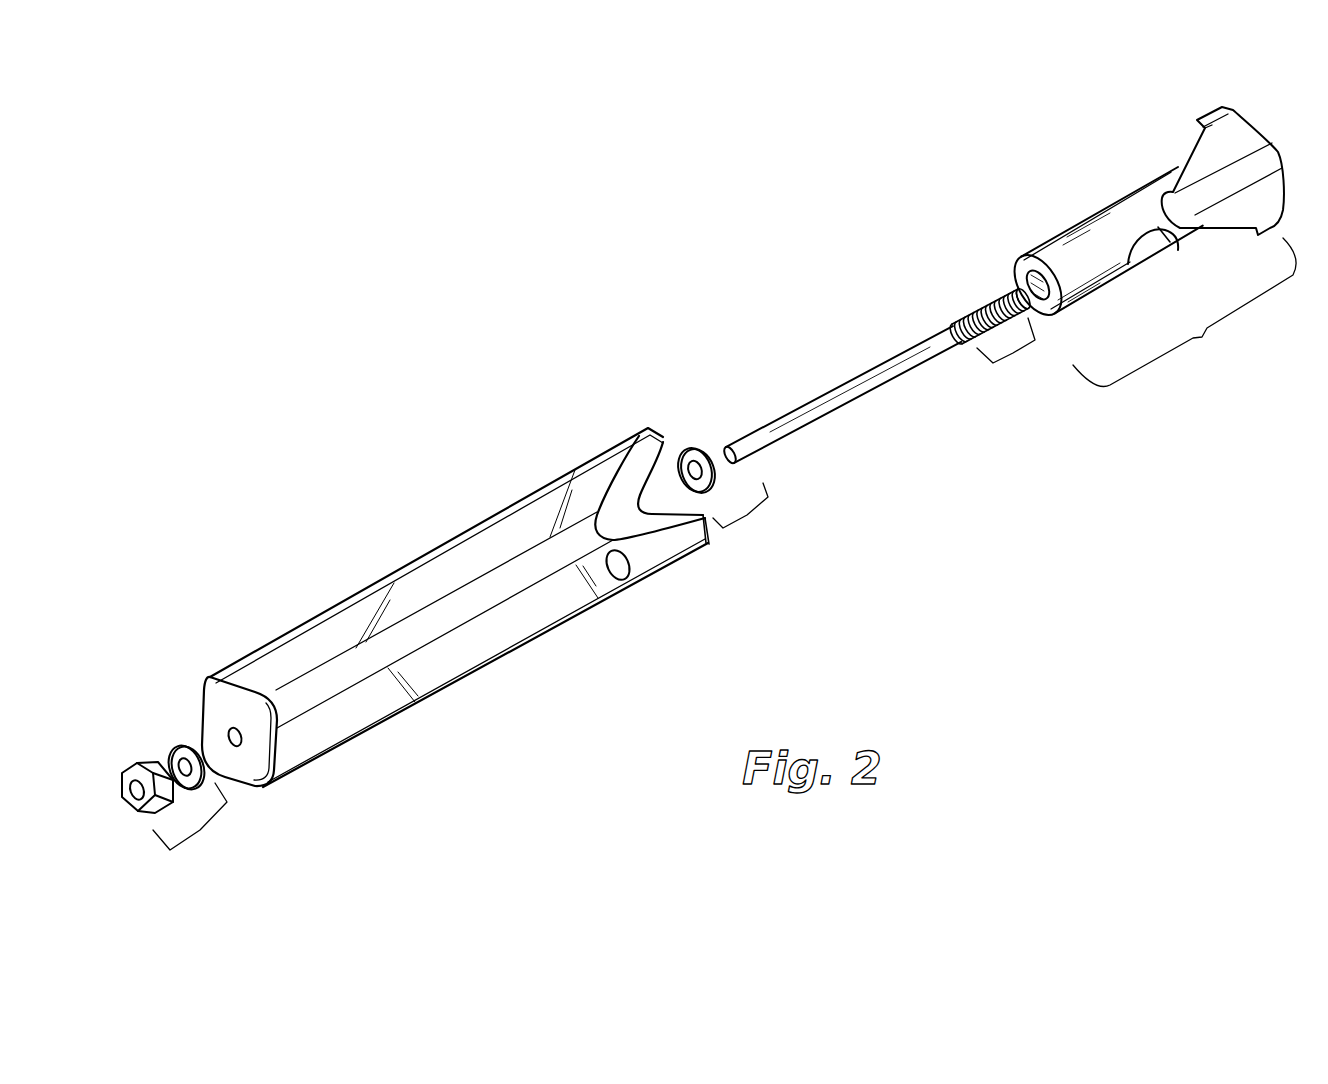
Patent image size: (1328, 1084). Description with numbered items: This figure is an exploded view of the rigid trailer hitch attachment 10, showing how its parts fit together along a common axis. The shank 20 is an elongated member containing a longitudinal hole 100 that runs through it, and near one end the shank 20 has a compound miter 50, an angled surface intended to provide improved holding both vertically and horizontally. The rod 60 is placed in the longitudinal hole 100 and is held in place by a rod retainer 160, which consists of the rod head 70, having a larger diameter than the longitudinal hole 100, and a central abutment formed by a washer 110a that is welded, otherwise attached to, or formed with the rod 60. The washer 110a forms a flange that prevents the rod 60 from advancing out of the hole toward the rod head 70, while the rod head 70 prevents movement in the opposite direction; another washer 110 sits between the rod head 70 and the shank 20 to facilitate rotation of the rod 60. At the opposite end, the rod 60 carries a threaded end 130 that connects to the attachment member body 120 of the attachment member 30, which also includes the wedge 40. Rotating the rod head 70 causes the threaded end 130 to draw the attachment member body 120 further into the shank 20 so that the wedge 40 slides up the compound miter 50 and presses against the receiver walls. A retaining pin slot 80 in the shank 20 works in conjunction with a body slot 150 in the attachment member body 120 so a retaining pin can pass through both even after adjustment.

The rigid trailer hitch attachment 10 is at (462, 362).
The shank 20 is at (437, 567).
The attachment member 30 is at (1202, 337).
The wedge 40 is at (1256, 122).
The compound miter 50 is at (625, 495).
The rod 60 is at (873, 377).
The rod head 70 is at (140, 762).
The retaining pin slot 80 is at (620, 568).
The longitudinal hole 100 is at (233, 729).
The washer 110 is at (697, 447).
The washer 110a is at (182, 747).
The attachment member body 120 is at (1103, 230).
The threaded end 130 is at (973, 292).
The body slot 150 is at (1172, 230).
The rod retainer 160 is at (200, 830).